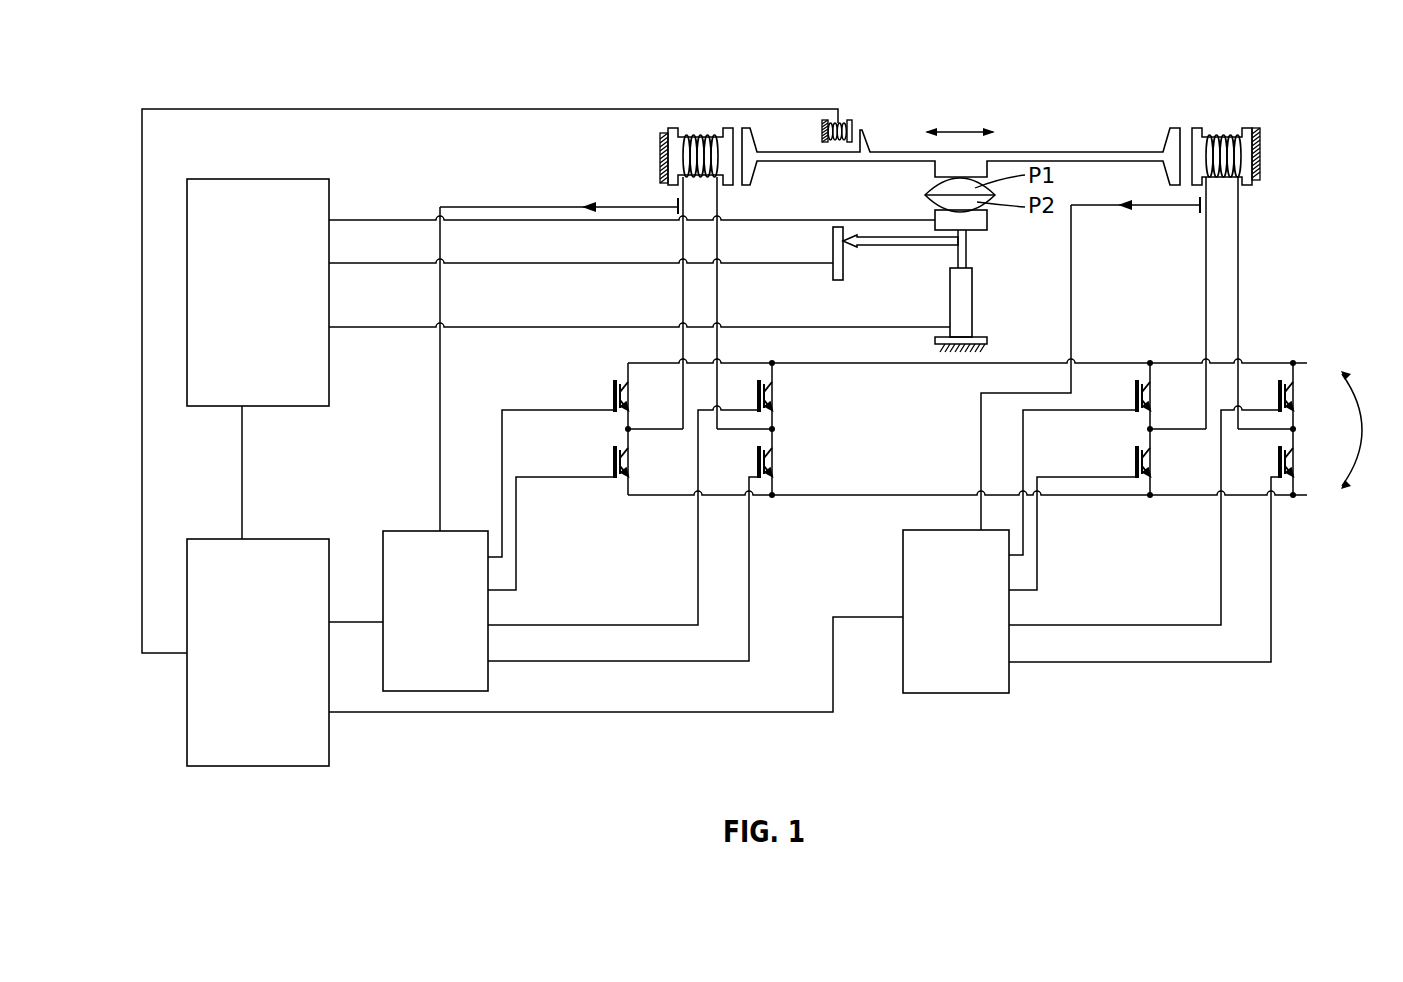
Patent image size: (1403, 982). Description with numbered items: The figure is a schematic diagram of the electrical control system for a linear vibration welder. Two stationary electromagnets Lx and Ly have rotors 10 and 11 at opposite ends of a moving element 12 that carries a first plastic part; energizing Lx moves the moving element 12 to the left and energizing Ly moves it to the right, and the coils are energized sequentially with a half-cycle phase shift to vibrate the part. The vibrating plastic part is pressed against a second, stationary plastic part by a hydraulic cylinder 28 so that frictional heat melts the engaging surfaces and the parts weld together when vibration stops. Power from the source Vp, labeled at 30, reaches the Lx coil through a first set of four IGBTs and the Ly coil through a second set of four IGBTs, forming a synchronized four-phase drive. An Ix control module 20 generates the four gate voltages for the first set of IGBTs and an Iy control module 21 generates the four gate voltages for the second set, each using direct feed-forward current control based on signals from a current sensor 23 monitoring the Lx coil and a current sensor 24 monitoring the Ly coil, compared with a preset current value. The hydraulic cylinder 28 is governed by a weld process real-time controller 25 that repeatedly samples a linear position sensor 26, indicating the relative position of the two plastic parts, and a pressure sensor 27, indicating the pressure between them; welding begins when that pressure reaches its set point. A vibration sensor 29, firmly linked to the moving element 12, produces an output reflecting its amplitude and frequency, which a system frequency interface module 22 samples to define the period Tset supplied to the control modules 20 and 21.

The rotor 10 is at (672, 132).
The rotor 11 is at (1248, 132).
The moving element 12 is at (1004, 152).
The Ix control module 20 is at (473, 682).
The Iy control module 21 is at (995, 682).
The system frequency interface module 22 is at (312, 745).
The current sensor 23 is at (677, 203).
The current sensor 24 is at (1204, 204).
The weld process real-time controller 25 is at (297, 392).
The linear position sensor 26 is at (837, 268).
The pressure sensor 27 is at (977, 225).
The hydraulic cylinder 28 is at (963, 298).
The vibration sensor 29 is at (848, 124).
The power supply Vp 30 is at (1372, 402).